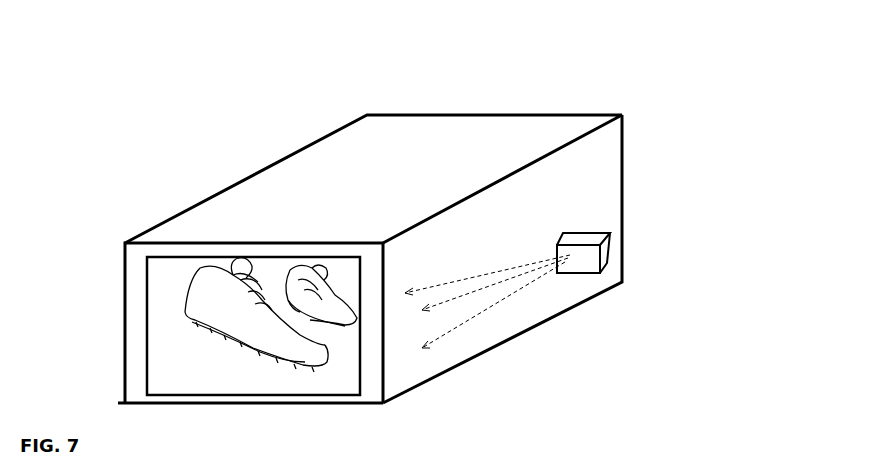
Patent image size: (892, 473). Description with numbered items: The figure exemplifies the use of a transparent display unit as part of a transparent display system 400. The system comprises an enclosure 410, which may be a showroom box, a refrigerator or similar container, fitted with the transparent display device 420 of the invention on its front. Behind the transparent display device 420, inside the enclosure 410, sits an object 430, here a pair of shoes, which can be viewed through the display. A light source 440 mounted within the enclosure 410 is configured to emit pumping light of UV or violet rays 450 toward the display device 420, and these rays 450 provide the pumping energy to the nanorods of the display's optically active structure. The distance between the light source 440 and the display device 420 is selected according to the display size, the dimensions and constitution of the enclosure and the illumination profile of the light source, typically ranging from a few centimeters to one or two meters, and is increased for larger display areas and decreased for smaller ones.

The transparent display system 400 is at (403, 221).
The enclosure 410 is at (603, 116).
The transparent display device 420 is at (177, 348).
The object 430 is at (232, 265).
The light source 440 is at (608, 218).
The pumping light of UV or Violet rays 450 is at (525, 302).